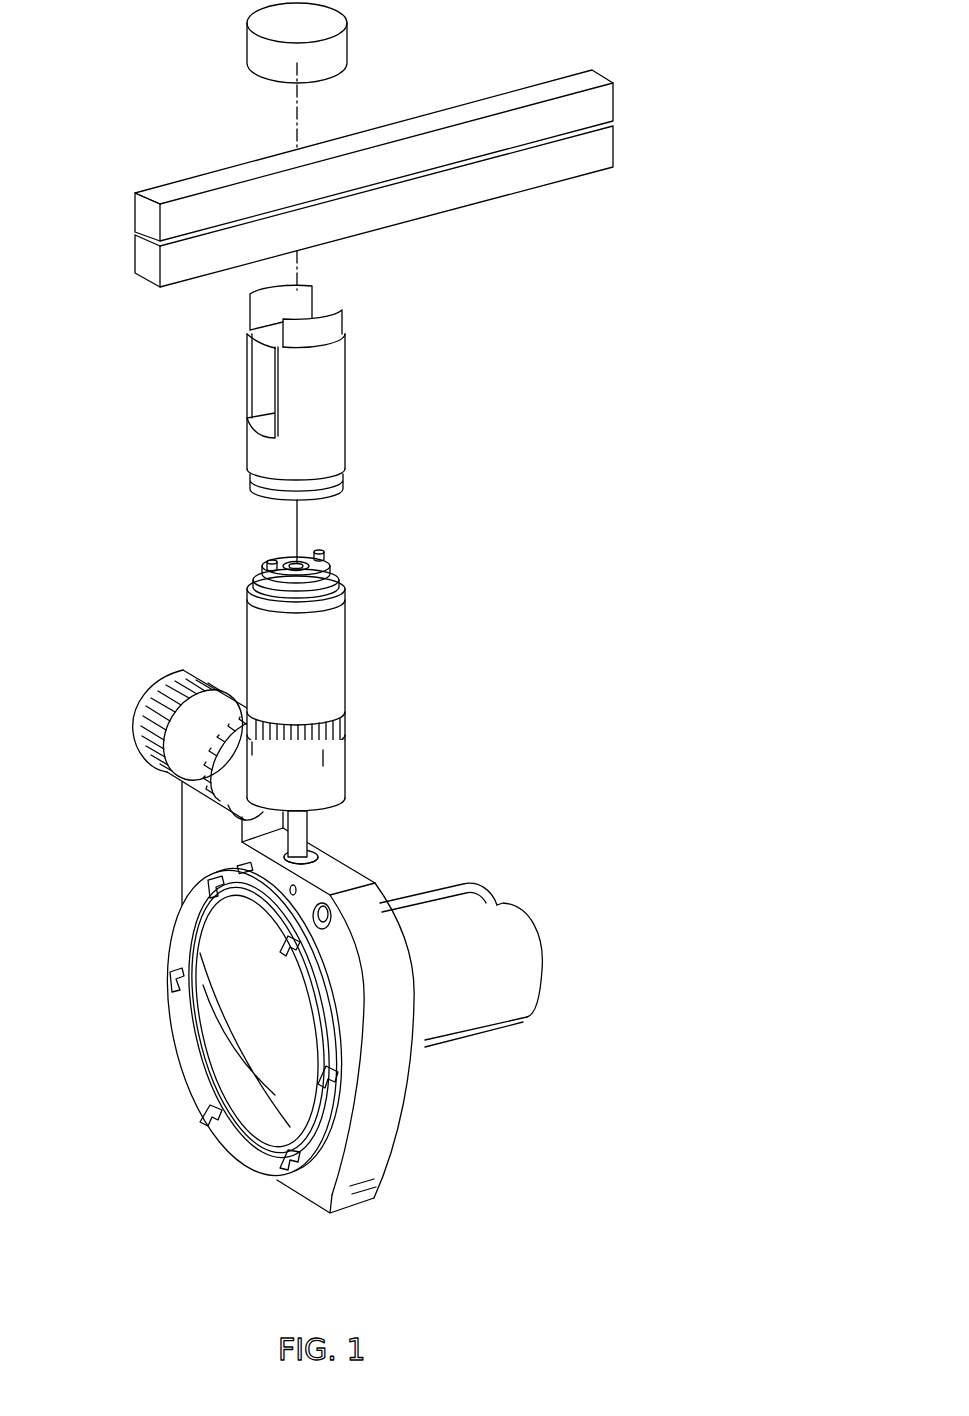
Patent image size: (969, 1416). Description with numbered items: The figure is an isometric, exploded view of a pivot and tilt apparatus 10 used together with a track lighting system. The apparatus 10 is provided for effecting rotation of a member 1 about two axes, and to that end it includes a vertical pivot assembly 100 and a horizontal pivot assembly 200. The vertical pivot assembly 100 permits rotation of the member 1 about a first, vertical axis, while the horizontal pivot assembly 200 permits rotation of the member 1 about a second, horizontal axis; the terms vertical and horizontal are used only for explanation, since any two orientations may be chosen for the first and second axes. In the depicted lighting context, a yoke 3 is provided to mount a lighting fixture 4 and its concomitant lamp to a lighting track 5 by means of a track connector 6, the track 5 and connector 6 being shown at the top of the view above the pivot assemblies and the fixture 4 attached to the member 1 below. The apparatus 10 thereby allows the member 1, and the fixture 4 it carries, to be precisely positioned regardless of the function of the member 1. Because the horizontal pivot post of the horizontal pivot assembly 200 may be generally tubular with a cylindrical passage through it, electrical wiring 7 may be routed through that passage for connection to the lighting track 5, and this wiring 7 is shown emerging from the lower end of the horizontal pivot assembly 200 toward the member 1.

The member 1 is at (367, 905).
The yoke 3 is at (197, 848).
The lighting fixture 4 is at (532, 987).
The lighting track 5 is at (530, 178).
The track connector 6 is at (335, 55).
The electrical wiring 7 is at (302, 840).
The apparatus 10 is at (362, 757).
The vertical pivot assembly 100 is at (180, 758).
The horizontal pivot assembly 200 is at (328, 673).